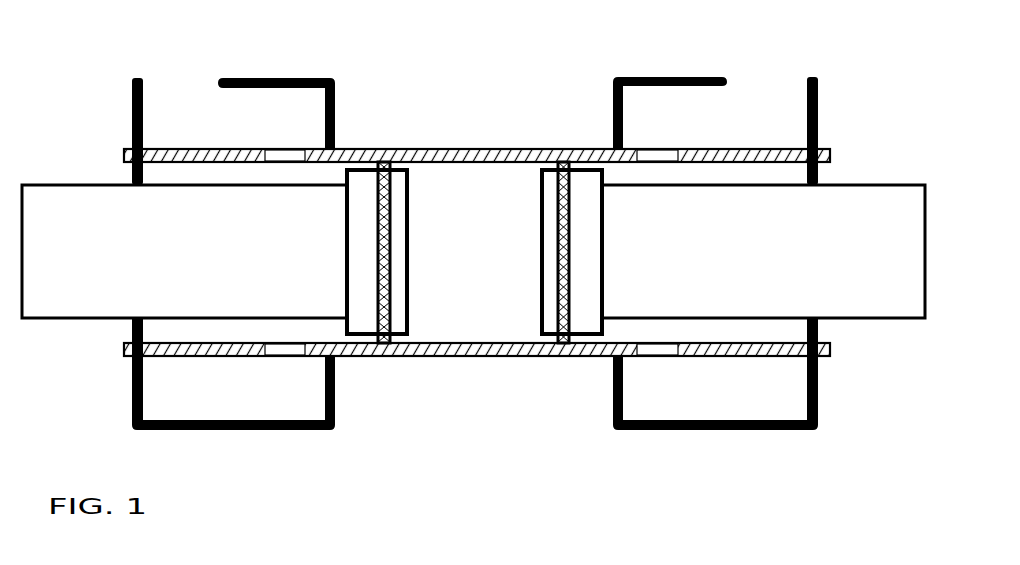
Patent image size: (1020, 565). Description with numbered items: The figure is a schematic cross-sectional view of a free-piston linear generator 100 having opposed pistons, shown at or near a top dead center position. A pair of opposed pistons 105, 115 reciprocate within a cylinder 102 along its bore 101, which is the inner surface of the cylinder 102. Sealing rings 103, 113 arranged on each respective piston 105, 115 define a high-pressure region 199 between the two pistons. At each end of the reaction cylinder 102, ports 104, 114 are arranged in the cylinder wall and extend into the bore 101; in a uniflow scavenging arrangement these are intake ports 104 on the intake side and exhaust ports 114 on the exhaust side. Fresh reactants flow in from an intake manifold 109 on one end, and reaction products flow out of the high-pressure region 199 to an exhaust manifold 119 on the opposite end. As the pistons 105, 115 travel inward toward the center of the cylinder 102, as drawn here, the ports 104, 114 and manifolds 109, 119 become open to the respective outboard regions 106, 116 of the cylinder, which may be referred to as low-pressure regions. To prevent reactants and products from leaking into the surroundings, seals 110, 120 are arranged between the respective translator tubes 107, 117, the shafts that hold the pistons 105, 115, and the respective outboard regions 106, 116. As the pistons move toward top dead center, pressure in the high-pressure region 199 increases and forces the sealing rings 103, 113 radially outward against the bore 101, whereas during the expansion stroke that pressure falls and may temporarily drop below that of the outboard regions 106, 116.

The linear generator 100 is at (77, 24).
The bore 101 is at (509, 341).
The cylinder 102 is at (408, 148).
The sealing ring 103 is at (572, 238).
The intake port 104 is at (652, 149).
The piston 105 is at (585, 274).
The outboard region 106 is at (794, 177).
The translator tube 107 is at (802, 260).
The intake manifold 109 is at (818, 406).
The seal 110 is at (817, 322).
The sealing ring 113 is at (378, 248).
The exhaust port 114 is at (283, 149).
The piston 115 is at (362, 283).
The outboard region 116 is at (155, 173).
The translator tube 117 is at (96, 263).
The exhaust manifold 119 is at (132, 405).
The seal 120 is at (132, 324).
The high-pressure region 199 is at (459, 263).